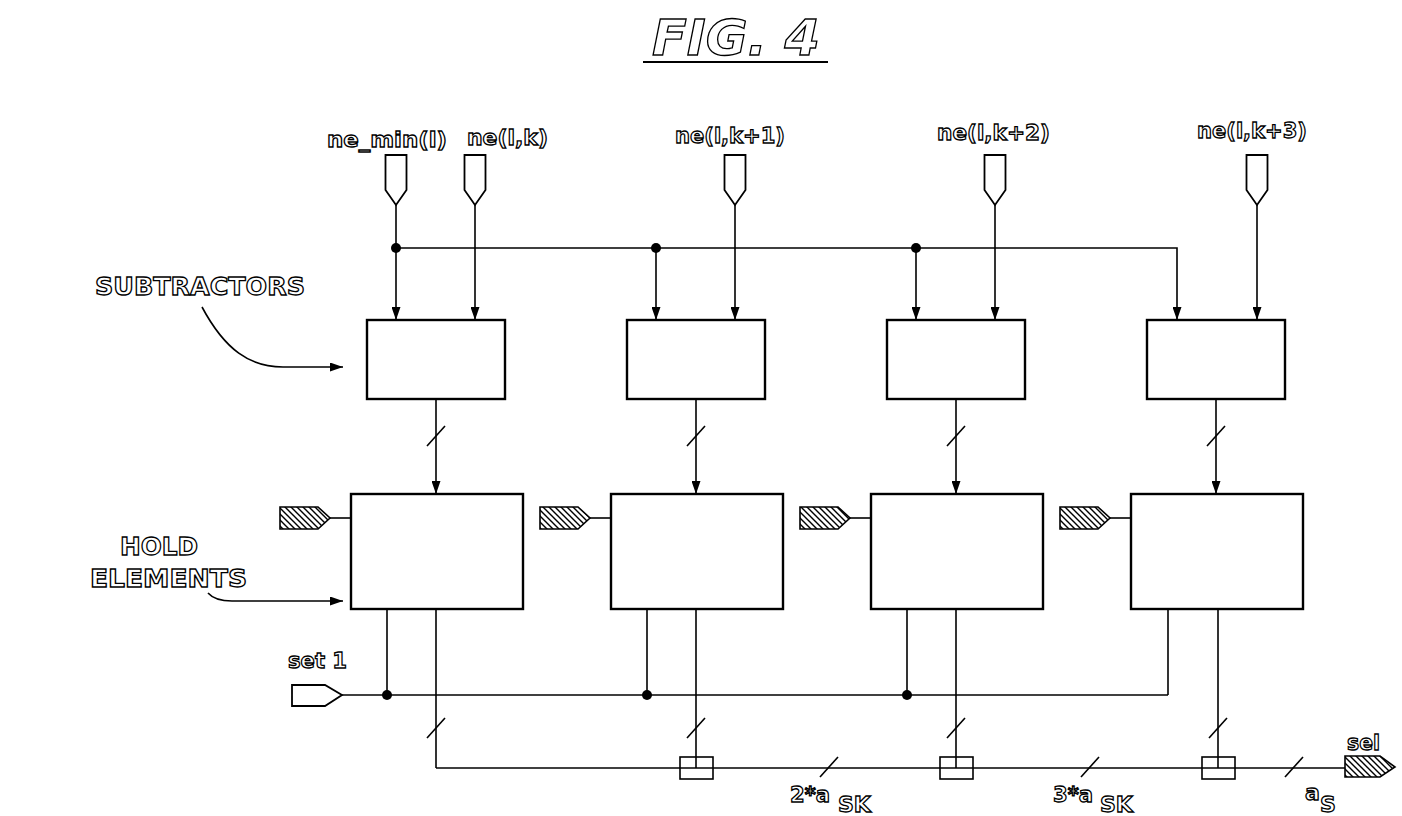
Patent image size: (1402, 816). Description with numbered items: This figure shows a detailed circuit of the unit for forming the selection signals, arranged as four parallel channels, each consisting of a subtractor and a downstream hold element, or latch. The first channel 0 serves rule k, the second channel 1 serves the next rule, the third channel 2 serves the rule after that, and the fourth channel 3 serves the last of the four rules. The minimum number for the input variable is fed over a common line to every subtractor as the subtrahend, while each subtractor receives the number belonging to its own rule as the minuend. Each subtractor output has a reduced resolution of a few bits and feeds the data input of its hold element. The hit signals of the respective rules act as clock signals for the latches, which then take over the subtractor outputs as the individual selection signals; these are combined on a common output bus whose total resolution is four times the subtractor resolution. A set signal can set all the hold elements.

The subtractor SUB0 and hold element LAT0 (channel k) 0 is at (394, 544).
The subtractor SUB1 and hold element LAT1 (channel k+1) 1 is at (657, 549).
The subtractor SUB2 and hold element LAT2 (channel k+2) 2 is at (921, 549).
The subtractor SUB3 and hold element LAT3 (channel k+3) 3 is at (1181, 549).